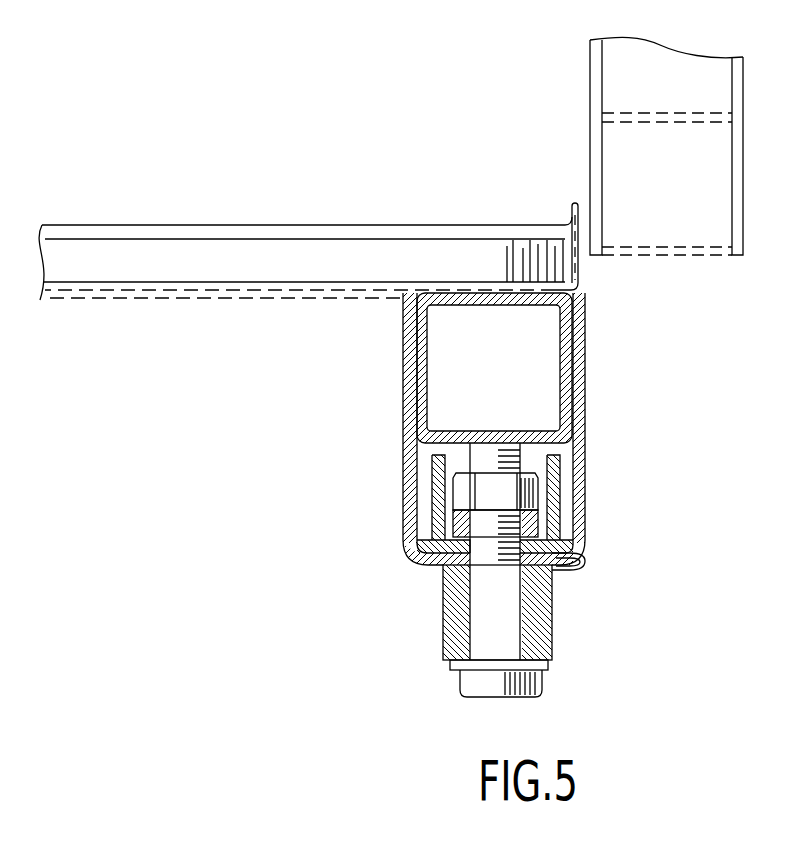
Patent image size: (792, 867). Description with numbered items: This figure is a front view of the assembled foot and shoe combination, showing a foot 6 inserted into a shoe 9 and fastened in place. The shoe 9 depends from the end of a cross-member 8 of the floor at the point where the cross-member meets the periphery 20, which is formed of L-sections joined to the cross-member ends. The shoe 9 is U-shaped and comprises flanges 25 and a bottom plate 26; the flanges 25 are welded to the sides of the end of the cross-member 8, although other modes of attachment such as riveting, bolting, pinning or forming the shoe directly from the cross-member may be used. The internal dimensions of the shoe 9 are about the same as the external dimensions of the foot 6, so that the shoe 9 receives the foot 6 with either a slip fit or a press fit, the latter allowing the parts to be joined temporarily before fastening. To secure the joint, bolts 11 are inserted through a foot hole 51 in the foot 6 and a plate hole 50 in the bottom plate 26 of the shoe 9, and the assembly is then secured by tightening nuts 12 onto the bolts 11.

The periphery 20 is at (290, 224).
The cross-member 8 is at (560, 340).
The flanges 25 is at (403, 347).
The foot 6 is at (495, 429).
The nuts 12 is at (445, 489).
The foot hole 51 is at (577, 556).
The plate hole 50 is at (571, 565).
The bottom plate 26 is at (574, 577).
The shoe 9 is at (381, 582).
The bolts 11 is at (462, 695).